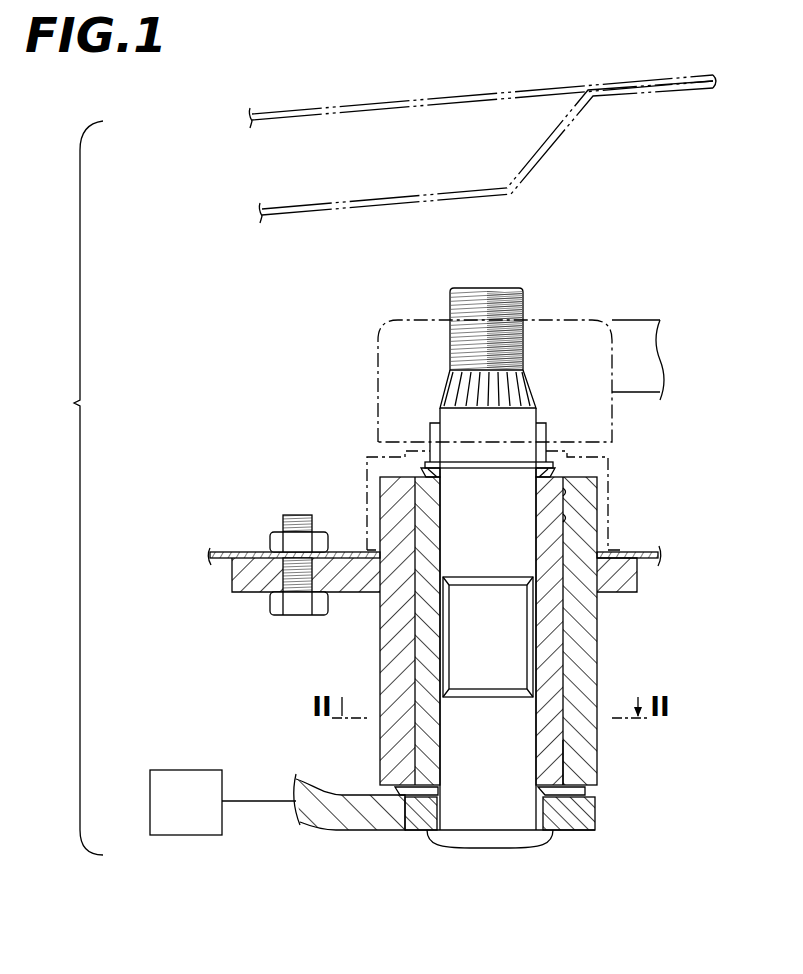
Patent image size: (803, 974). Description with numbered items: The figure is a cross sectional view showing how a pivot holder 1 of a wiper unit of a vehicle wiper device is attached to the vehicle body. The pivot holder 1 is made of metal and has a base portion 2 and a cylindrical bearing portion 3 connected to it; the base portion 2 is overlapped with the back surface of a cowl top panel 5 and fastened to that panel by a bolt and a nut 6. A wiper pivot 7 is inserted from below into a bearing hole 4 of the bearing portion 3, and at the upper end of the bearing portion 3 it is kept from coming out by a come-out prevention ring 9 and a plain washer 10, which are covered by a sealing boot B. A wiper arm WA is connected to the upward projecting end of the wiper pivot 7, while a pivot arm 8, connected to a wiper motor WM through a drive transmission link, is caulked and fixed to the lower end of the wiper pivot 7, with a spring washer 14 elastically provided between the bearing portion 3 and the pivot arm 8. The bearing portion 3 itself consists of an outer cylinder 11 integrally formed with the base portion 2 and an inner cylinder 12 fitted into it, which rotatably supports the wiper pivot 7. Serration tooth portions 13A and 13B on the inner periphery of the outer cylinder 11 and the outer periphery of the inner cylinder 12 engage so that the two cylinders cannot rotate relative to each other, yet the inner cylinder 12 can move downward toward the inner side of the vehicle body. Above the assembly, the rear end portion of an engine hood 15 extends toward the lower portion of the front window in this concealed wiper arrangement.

The pivot holder 1 is at (613, 630).
The base portion 2 is at (232, 588).
The bearing portion 3 is at (370, 668).
The bearing hole 4 is at (449, 620).
The cowl top panel 5 is at (625, 549).
The bolt and nut 6 is at (270, 535).
The wiper pivot 7 is at (519, 286).
The pivot arm 8 is at (333, 831).
The come-out prevention ring 9 is at (424, 463).
The plain washer 10 is at (422, 472).
The outer cylinder 11 is at (598, 665).
The inner cylinder 12 is at (556, 756).
The tooth portion 13A is at (565, 490).
The tooth portion 13B is at (565, 518).
The spring washer 14 is at (408, 798).
The engine hood 15 is at (558, 84).
The wiper arm WA is at (617, 318).
The wiper motor WM is at (223, 802).
The sealing boot B is at (368, 502).